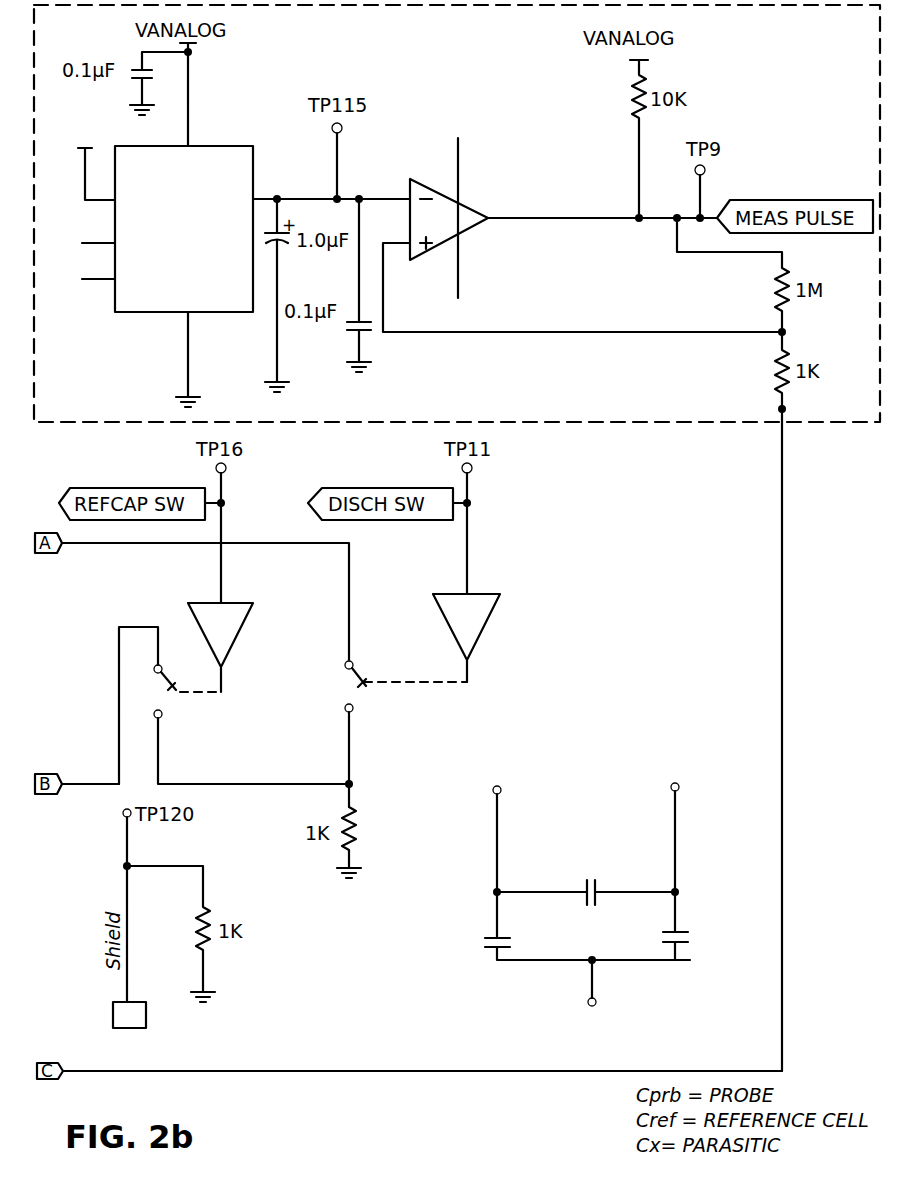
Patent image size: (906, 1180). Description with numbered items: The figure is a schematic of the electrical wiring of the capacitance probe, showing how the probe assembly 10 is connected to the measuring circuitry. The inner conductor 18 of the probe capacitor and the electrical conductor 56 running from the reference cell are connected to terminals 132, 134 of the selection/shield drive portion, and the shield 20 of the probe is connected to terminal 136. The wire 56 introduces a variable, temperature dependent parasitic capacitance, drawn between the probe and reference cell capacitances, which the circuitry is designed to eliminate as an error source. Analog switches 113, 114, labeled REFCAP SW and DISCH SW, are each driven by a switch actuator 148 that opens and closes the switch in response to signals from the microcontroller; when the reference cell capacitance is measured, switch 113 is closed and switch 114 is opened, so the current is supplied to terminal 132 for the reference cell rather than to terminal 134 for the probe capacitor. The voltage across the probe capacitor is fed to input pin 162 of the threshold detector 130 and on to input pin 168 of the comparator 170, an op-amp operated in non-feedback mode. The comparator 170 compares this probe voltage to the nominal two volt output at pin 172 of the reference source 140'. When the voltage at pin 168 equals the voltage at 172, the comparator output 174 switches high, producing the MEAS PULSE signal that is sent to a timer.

The threshold detector 130 is at (855, 433).
The reference source 140' is at (146, 264).
The output pin of reference source 172 is at (257, 198).
The comparator 170 is at (422, 178).
The input pin of comparator 168 is at (404, 247).
The output of comparator 174 is at (663, 222).
The input pin of threshold detector 162 is at (780, 409).
The switch actuator 148 is at (240, 640).
The switch 113 is at (234, 705).
The switch 114 is at (406, 734).
The terminal 134 is at (493, 792).
The electrical conductor 56 is at (496, 838).
The terminal 132 is at (672, 790).
The inner conductor 18 is at (676, 842).
The probe assembly 10 is at (595, 875).
The shield 20 is at (598, 966).
The terminal 136 is at (130, 1000).